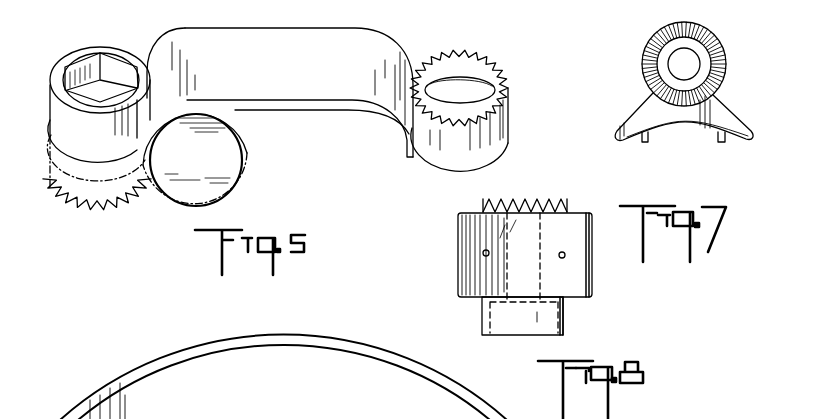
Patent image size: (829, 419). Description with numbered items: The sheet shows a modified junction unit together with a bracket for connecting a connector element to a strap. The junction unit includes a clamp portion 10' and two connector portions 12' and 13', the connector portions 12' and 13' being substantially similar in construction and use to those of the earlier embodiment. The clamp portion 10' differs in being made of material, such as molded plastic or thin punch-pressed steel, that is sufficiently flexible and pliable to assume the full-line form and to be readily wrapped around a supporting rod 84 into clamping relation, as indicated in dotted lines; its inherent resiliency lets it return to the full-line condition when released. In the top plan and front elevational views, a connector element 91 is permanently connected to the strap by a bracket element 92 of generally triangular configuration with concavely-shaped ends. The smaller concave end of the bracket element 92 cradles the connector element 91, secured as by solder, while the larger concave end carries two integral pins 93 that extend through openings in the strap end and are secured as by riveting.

In FIG. 5, the clamp portion 10' is at (280, 110).
In FIG. 5, the connector portion 12' is at (89, 117).
In FIG. 5, the connector portion 13' is at (283, 129).
In FIG. 5, the supporting rod 84 is at (228, 193).
In FIG. 7, the connector element 91 is at (725, 60).
In FIG. 8, the connector element 91 is at (565, 328).
In FIG. 7, the bracket element 92 is at (727, 116).
In FIG. 8, the bracket element 92 is at (577, 295).
In FIG. 7, the integral pins 93 is at (718, 138).
In FIG. 8, the integral pins 93 is at (488, 257).